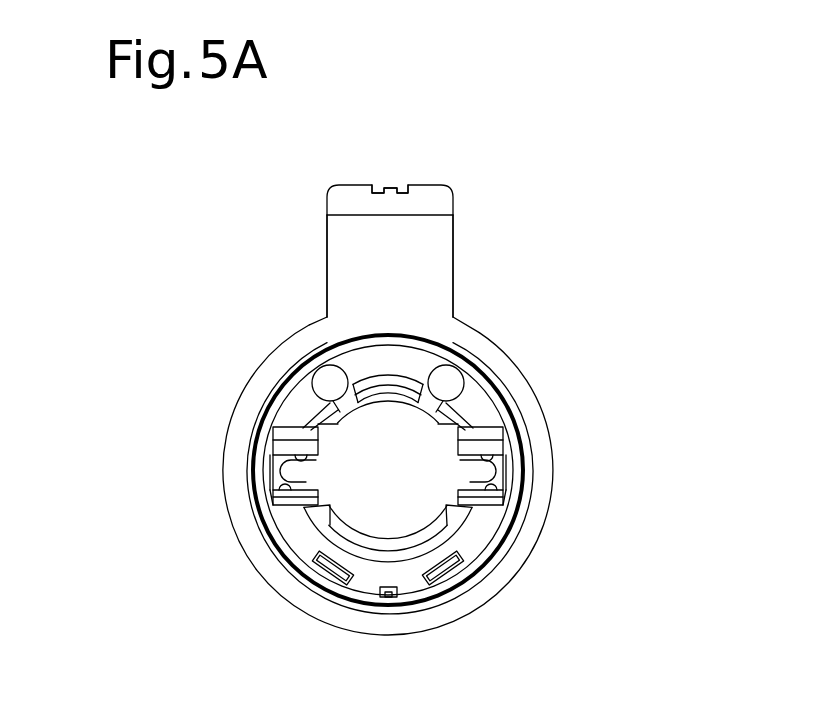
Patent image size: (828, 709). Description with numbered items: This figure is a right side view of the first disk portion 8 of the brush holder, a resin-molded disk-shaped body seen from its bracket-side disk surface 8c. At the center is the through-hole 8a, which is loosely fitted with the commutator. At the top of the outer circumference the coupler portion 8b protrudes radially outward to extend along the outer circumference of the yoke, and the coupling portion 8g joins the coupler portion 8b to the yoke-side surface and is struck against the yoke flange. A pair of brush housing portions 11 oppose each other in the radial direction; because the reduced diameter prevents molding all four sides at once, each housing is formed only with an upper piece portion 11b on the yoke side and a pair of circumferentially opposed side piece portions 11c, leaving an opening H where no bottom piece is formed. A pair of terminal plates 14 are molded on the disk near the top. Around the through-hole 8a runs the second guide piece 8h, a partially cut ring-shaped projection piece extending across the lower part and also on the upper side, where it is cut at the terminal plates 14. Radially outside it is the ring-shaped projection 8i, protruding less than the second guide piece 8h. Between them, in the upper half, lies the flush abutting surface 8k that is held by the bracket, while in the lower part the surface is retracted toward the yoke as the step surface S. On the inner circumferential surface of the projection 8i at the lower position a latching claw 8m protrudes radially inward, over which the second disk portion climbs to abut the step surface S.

The first disk portion 8 is at (321, 184).
The coupler portion 8b is at (436, 202).
The coupling portion 8g is at (372, 312).
The bracket-side disk surface 8c is at (480, 396).
The ring-shaped projection 8i is at (500, 410).
The terminal plates 14 is at (452, 375).
The abutting surface 8k is at (392, 363).
The second guide piece 8h is at (430, 422).
The brush housing portions 11 is at (265, 478).
The upper piece portion 11b is at (264, 468).
The side piece portions 11c is at (273, 428).
The opening H is at (272, 492).
The through-hole 8a is at (460, 573).
The step surface S is at (412, 578).
The latching claw 8m is at (394, 598).